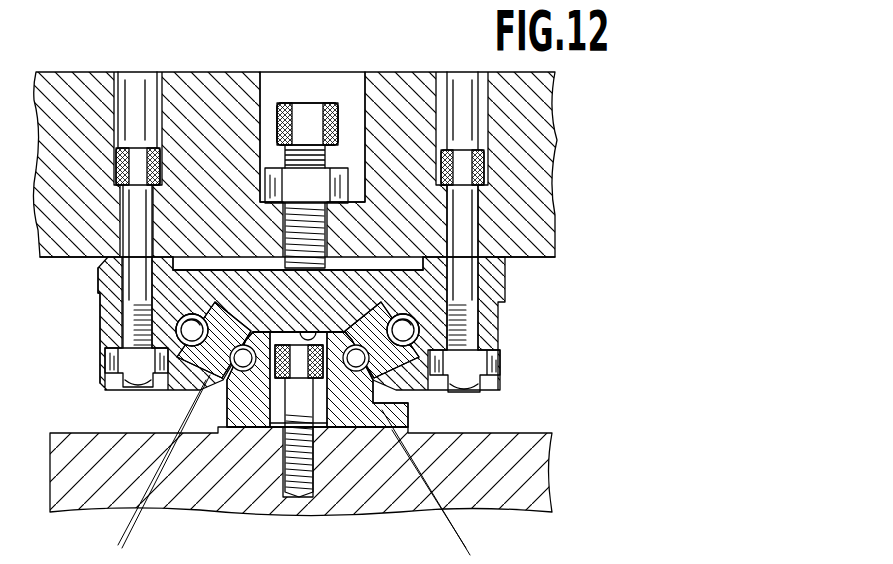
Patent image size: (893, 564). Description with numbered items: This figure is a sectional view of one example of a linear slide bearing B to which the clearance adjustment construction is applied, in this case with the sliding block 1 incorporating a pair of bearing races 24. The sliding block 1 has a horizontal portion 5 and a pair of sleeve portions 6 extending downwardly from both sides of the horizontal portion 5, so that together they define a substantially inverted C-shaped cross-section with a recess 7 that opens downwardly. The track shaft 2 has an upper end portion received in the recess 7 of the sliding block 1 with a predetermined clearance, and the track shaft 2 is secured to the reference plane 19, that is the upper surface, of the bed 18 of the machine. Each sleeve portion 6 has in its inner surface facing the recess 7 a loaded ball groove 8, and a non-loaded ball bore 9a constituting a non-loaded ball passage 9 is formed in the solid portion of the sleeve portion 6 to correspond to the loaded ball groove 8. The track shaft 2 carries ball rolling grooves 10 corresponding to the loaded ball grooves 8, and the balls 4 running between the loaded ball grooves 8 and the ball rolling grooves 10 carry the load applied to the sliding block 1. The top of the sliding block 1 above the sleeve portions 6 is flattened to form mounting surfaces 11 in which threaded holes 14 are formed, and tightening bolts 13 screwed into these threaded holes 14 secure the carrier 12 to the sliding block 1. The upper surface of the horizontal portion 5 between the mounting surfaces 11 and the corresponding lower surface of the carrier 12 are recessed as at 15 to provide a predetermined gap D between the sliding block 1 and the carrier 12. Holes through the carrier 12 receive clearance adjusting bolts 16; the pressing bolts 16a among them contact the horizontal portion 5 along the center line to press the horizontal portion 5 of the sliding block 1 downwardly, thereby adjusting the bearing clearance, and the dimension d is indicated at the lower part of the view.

The carrier 12 is at (65, 72).
The tightening bolts 13 is at (137, 150).
The gap D is at (205, 262).
The horizontal portion 5 is at (233, 272).
The recess 15 is at (257, 205).
The pressing bolts 16a is at (300, 103).
The clearance adjusting bolts 16 is at (307, 124).
The recess 7 is at (340, 325).
The mounting surfaces 11 is at (100, 257).
The linear slide bearing B is at (96, 278).
The sliding block 1 is at (96, 305).
The threaded holes 14 is at (126, 295).
The sleeve portions 6 is at (107, 343).
The non-loaded ball bore 9a is at (187, 352).
The non-loaded ball passage 9 is at (297, 330).
The balls 4 is at (403, 340).
The bed 18 is at (513, 431).
The bearing races 24 is at (204, 377).
The track shaft 2 is at (229, 409).
The loaded ball groove 8 is at (238, 385).
The reference plane 19 is at (255, 430).
The ball rolling grooves 10 is at (287, 410).
The offset distance d is at (430, 559).